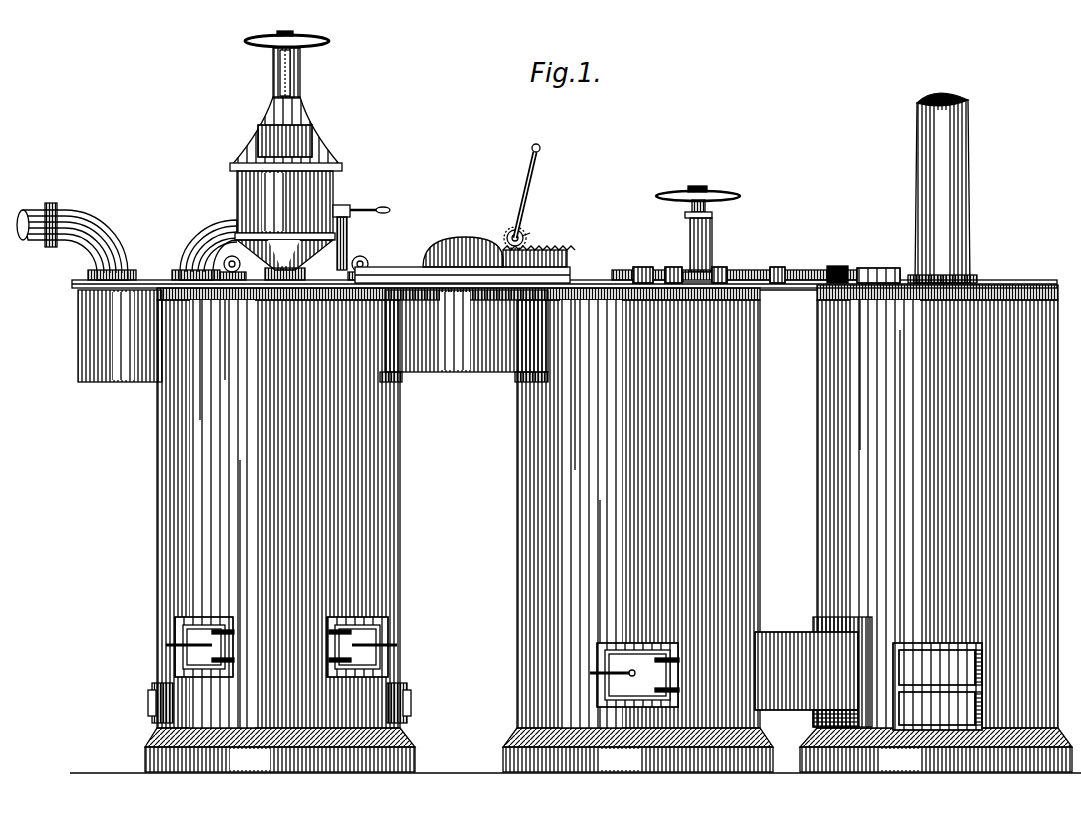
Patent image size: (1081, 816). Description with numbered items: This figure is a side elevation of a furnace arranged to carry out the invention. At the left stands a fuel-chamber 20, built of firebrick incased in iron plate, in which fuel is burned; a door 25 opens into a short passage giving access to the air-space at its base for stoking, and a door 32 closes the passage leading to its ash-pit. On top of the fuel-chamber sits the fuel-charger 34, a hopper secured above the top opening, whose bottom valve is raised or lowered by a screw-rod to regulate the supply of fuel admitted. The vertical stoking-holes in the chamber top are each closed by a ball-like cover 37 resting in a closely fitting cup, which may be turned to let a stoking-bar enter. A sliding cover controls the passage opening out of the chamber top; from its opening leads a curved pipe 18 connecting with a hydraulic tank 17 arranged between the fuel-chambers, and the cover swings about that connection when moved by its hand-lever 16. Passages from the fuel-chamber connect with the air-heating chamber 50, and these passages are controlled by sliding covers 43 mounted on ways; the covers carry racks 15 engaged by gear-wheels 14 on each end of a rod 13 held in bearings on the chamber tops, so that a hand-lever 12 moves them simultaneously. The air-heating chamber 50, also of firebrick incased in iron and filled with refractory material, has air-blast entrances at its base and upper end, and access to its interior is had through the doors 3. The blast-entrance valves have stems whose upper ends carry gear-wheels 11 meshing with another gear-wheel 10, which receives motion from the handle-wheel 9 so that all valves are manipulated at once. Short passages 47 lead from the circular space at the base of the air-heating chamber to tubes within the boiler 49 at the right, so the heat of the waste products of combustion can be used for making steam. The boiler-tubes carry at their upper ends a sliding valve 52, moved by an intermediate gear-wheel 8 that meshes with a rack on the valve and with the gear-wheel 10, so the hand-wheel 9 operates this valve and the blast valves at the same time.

The door 3 is at (634, 675).
The intermediate gear-wheel 8 is at (787, 269).
The handle-wheel 9 is at (740, 197).
The gear-wheel 10 is at (720, 268).
The gear-wheels 11 is at (756, 268).
The hand-lever 12 is at (535, 191).
The rod 13 is at (508, 238).
The gear-wheels 14 is at (532, 228).
The racks 15 is at (548, 250).
The hand-lever 16 is at (362, 229).
The hydraulic tank 17 is at (120, 336).
The pipe 18 is at (212, 224).
The fuel-chamber 20 is at (280, 536).
The door 25 is at (281, 647).
The doors 32 is at (150, 694).
The fuel-charger 34 is at (286, 155).
The ball-like cover 37 is at (357, 258).
The sliding covers 43 is at (462, 260).
The short passages 47 is at (782, 640).
The boiler 49 is at (936, 536).
The air-heating chamber 50 is at (638, 536).
The sliding valve 52 is at (872, 273).